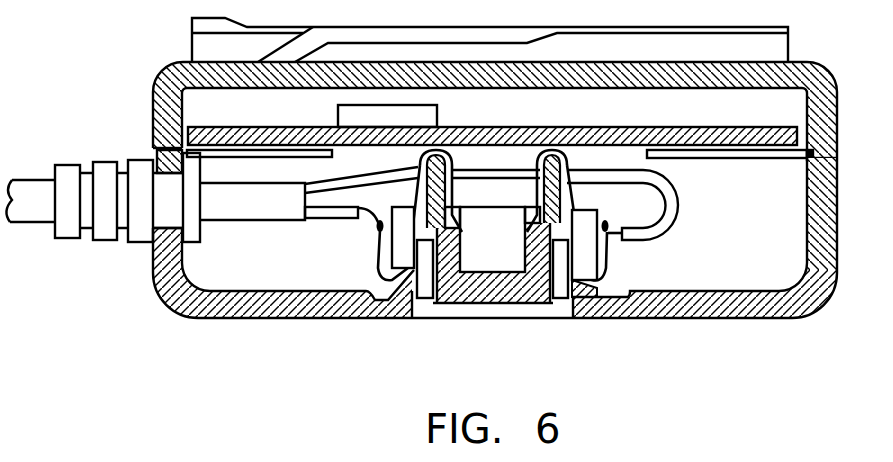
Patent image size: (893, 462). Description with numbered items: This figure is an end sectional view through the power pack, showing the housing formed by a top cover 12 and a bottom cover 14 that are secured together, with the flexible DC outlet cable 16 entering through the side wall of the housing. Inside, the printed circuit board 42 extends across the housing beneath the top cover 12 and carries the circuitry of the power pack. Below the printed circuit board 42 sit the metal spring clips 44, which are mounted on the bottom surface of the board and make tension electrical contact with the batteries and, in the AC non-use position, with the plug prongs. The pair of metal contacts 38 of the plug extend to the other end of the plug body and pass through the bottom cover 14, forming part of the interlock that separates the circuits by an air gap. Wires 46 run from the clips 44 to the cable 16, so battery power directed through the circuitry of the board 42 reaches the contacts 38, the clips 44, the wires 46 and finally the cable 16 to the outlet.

The top cover 12 is at (822, 97).
The bottom cover 14 is at (820, 281).
The flexible DC outlet cable 16 is at (27, 193).
The metal contacts 38 is at (425, 298).
The printed circuit board 42 is at (707, 128).
The metal spring clips 44 is at (527, 230).
The wires 46 is at (317, 193).